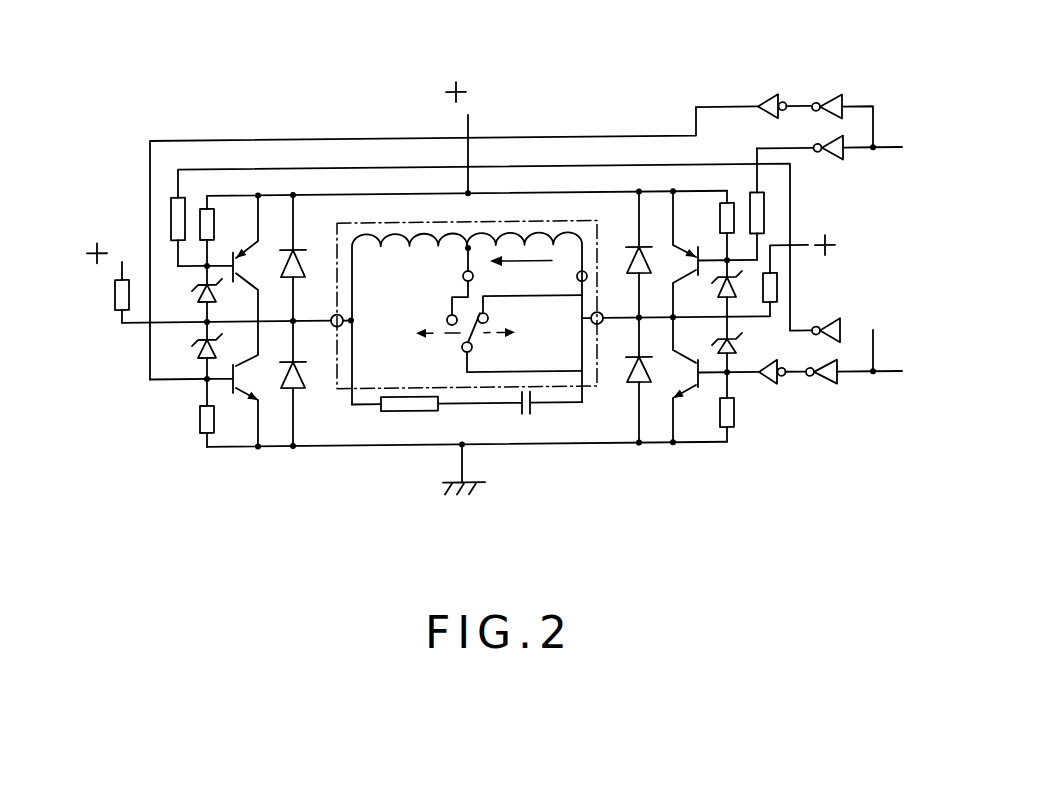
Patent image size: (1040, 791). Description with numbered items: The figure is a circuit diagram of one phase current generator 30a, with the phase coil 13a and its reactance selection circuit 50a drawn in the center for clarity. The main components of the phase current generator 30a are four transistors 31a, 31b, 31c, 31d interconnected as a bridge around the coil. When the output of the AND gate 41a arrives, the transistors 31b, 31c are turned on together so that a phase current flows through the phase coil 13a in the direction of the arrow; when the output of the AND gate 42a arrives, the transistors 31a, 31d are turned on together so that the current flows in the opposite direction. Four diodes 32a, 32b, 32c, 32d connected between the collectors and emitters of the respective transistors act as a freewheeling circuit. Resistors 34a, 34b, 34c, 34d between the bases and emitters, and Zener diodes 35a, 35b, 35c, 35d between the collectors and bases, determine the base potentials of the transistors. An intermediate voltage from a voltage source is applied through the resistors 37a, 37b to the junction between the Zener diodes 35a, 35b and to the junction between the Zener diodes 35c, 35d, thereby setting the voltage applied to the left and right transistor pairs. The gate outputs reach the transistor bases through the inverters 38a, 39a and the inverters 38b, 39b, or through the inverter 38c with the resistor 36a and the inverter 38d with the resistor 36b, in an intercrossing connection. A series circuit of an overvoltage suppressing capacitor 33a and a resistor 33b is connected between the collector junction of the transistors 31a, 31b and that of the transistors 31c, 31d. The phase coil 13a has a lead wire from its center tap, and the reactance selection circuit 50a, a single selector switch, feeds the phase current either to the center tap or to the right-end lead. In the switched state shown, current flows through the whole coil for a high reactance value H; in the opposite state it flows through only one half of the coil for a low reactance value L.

The phase current generator 30a is at (412, 82).
The phase coil 13a is at (511, 234).
The reactance selection circuit 50a is at (447, 318).
The transistor 31a is at (250, 263).
The transistor 31b is at (255, 403).
The transistor 31c is at (683, 264).
The transistor 31d is at (688, 399).
The diode 32a is at (306, 262).
The diode 32b is at (307, 386).
The diode 32c is at (626, 266).
The diode 32d is at (626, 386).
The overvoltage suppressing capacitor 33a is at (518, 411).
The resistor 33b is at (418, 412).
The resistor 34a is at (214, 231).
The resistor 34b is at (200, 419).
The resistor 34c is at (720, 229).
The resistor 34d is at (735, 431).
The Zener diode 35a is at (200, 299).
The Zener diode 35b is at (200, 340).
The Zener diode 35c is at (718, 292).
The Zener diode 35d is at (736, 347).
The resistor 36a is at (766, 215).
The resistor 36b is at (171, 212).
The resistor 37a is at (115, 295).
The resistor 37b is at (777, 289).
The inverter 38a is at (834, 98).
The inverter 38b is at (839, 367).
The inverter 38c is at (830, 142).
The inverter 38d is at (833, 325).
The inverter 39a is at (764, 98).
The inverter 39b is at (768, 388).
The AND gate 41a is at (956, 163).
The AND gate 42a is at (951, 390).